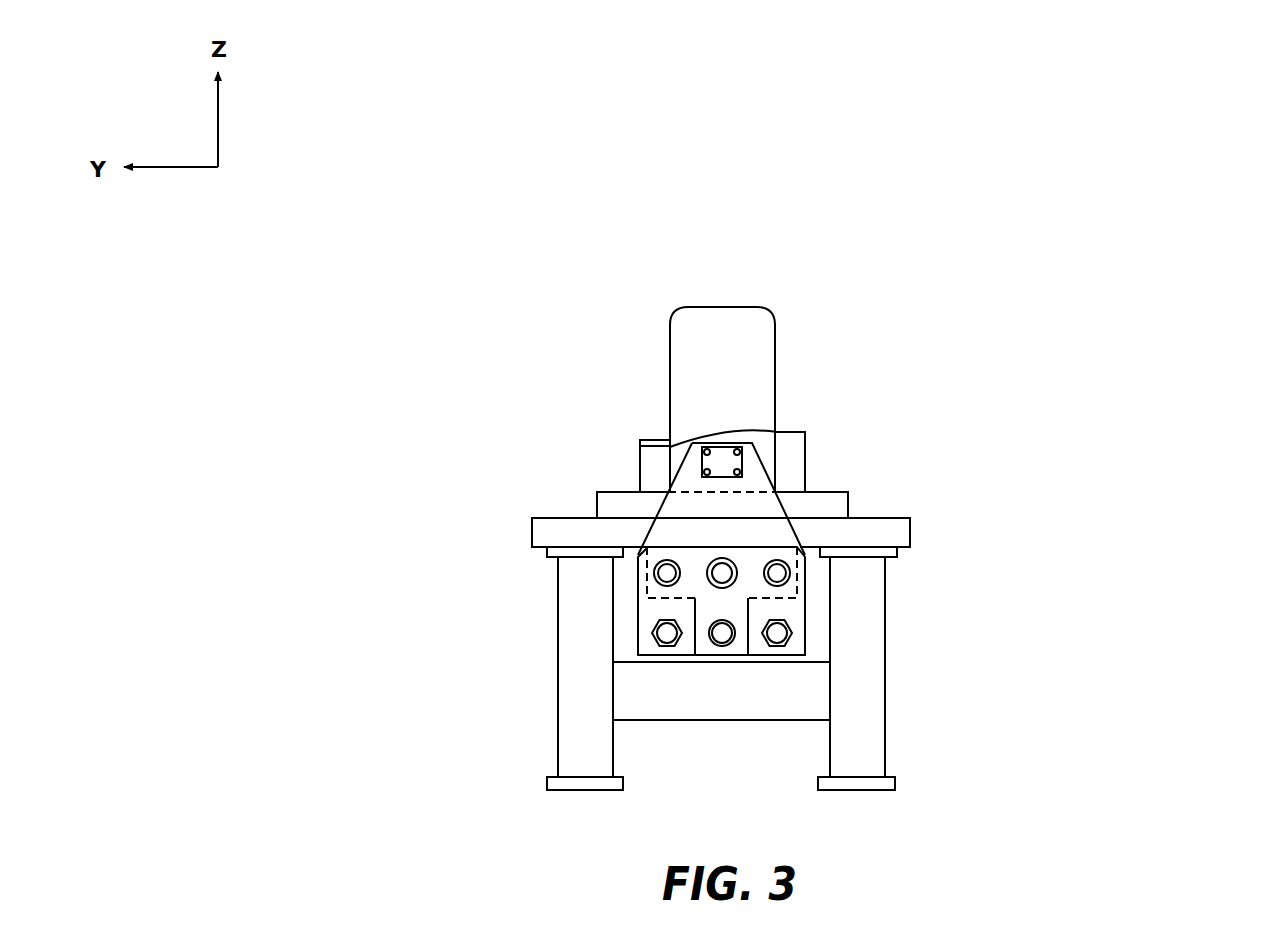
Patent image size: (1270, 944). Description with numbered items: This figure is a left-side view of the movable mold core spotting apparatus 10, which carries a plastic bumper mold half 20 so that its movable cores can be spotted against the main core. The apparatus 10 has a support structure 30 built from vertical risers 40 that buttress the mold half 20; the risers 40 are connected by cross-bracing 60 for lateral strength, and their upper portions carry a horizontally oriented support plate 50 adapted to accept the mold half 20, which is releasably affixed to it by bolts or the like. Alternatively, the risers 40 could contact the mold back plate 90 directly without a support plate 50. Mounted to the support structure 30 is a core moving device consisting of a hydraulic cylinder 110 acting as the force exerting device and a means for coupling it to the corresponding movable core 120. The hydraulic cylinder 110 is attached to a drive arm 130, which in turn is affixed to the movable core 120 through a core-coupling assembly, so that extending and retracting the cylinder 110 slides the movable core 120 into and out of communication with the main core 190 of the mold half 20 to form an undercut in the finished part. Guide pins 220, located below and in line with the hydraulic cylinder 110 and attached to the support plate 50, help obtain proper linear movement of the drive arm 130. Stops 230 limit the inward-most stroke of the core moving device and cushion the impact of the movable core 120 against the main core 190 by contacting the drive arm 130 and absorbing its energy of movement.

The movable mold core spotting apparatus 10 is at (1124, 278).
The mold half 20 is at (628, 380).
The support structure 30 is at (925, 793).
The vertical risers 40 is at (578, 747).
The support plate 50 is at (905, 531).
The cross-bracing 60 is at (675, 710).
The mold back plate 90 is at (825, 500).
The hydraulic cylinder 110 is at (707, 563).
The movable core 120 is at (760, 442).
The drive arm 130 is at (788, 535).
The main core 190 is at (753, 337).
The guide pins 220 is at (655, 573).
The stops 230 is at (652, 635).